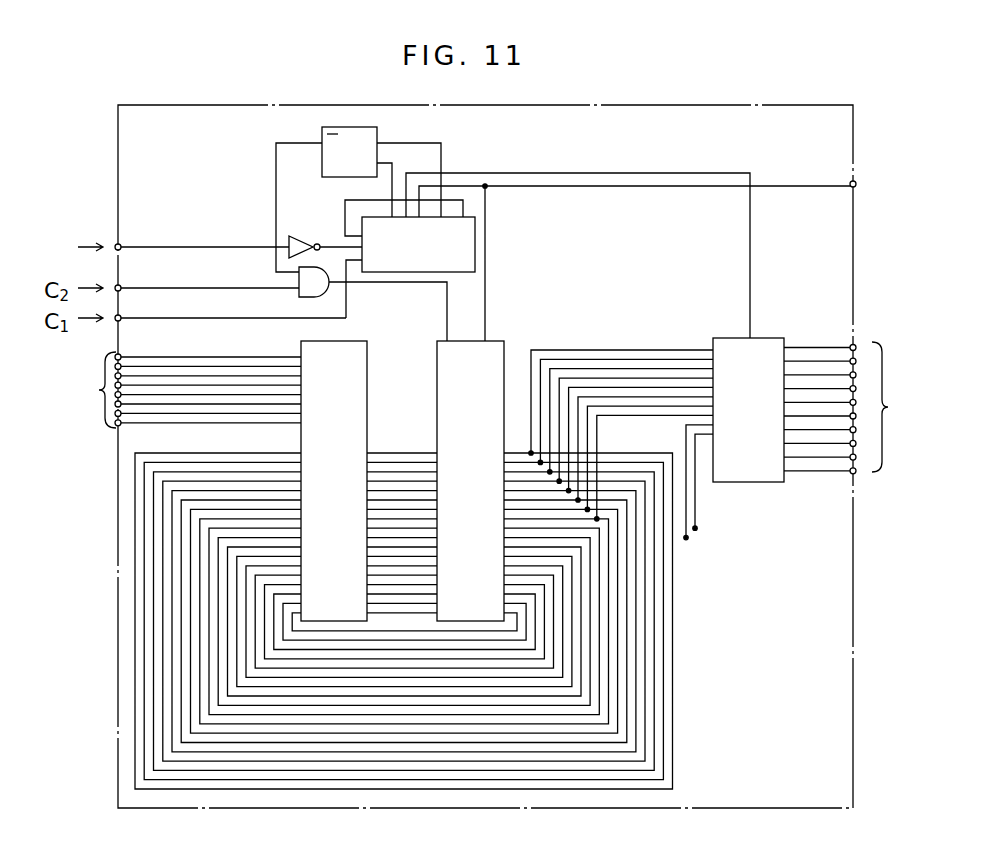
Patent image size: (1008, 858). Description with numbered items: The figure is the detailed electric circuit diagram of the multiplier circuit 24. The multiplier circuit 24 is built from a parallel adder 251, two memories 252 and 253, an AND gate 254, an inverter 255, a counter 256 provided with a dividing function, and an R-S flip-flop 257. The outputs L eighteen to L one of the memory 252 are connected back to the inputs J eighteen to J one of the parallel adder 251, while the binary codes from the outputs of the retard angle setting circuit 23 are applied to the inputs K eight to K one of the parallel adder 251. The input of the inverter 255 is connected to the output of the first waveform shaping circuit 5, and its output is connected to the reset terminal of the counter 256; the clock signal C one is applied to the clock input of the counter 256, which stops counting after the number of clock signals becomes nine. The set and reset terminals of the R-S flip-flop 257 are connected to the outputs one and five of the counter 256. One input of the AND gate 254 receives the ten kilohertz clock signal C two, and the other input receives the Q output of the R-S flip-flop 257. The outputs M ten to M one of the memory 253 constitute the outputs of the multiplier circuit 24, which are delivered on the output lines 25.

The multiplier circuit 24 is at (713, 104).
The retard angle setting circuit 23 is at (90, 402).
The output lines 25 is at (867, 184).
The first waveform shaping circuit 5 is at (168, 250).
The parallel adder 251 is at (352, 341).
The memory 252 is at (487, 341).
The memory 253 is at (793, 327).
The AND gate 254 is at (308, 297).
The inverter 255 is at (294, 236).
The counter with dividing function 256 is at (475, 237).
The R-S flip-flop 257 is at (366, 128).